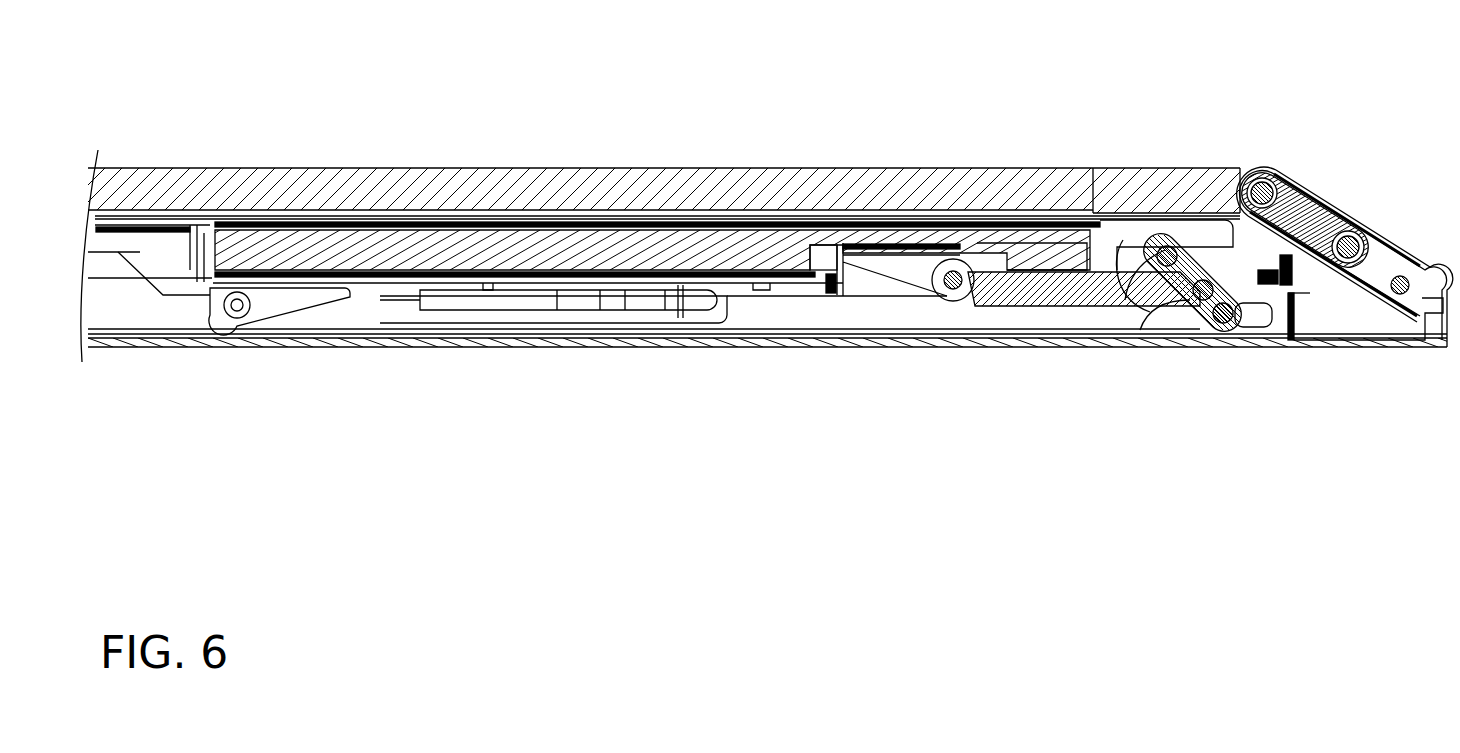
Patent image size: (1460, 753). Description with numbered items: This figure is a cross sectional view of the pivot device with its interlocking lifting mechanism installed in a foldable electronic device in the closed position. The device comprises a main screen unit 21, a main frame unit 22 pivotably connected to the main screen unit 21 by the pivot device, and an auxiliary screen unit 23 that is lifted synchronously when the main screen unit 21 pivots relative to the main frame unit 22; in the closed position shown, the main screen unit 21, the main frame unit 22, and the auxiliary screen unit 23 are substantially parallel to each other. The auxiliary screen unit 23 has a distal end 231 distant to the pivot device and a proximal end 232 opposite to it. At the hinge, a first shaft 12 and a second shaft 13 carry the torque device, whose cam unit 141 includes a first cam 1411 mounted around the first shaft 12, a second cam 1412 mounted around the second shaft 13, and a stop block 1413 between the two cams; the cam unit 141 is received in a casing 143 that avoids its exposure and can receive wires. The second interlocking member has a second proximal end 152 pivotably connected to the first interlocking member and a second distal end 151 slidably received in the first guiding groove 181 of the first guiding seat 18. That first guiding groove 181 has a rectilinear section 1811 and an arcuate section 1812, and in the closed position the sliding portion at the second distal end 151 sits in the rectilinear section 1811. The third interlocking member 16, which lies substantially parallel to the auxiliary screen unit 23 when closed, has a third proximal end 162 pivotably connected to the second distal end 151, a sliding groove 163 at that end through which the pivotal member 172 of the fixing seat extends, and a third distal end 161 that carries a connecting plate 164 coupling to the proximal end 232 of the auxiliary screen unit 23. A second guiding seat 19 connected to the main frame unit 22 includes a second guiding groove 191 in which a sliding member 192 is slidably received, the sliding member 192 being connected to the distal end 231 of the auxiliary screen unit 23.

The first shaft 12 is at (1244, 170).
The second shaft 13 is at (1347, 292).
The cam unit 141 is at (1453, 110).
The first cam 1411 is at (1262, 178).
The second cam 1412 is at (1372, 212).
The stop block 1413 is at (1312, 213).
The casing 143 is at (1398, 272).
The second distal end 151 is at (1225, 345).
The second proximal end 152 is at (1401, 318).
The third interlocking member 16 is at (1070, 328).
The third distal end 161 is at (950, 322).
The third proximal end 162 is at (1145, 258).
The sliding groove 163 is at (1175, 236).
The connecting plate 164 is at (888, 268).
The pivotal member 172 is at (1160, 272).
The first guiding seat 18 is at (1200, 362).
The first guiding groove 181 is at (1320, 450).
The rectilinear section 1811 is at (1272, 333).
The arcuate section 1812 is at (1155, 312).
The second guiding seat 19 is at (479, 348).
The second guiding groove 191 is at (397, 300).
The sliding member 192 is at (279, 330).
The main screen unit 21 is at (829, 177).
The main frame unit 22 is at (680, 342).
The auxiliary screen unit 23 is at (595, 262).
The distal end 231 is at (232, 208).
The proximal end 232 is at (1028, 208).